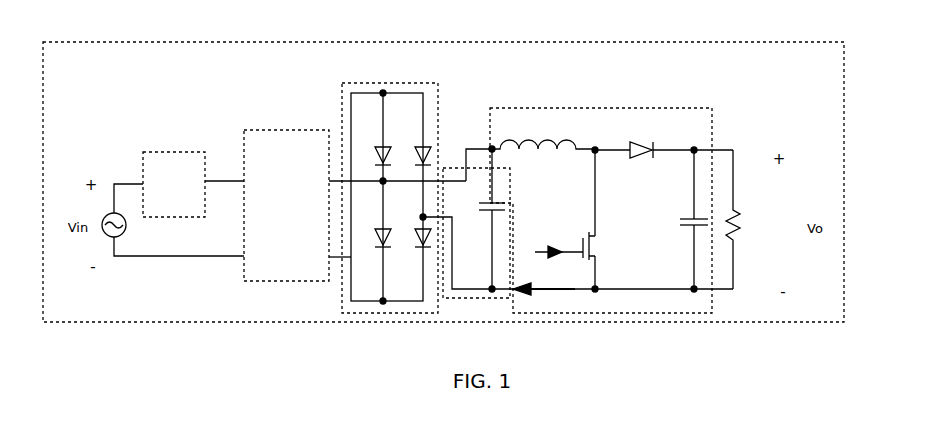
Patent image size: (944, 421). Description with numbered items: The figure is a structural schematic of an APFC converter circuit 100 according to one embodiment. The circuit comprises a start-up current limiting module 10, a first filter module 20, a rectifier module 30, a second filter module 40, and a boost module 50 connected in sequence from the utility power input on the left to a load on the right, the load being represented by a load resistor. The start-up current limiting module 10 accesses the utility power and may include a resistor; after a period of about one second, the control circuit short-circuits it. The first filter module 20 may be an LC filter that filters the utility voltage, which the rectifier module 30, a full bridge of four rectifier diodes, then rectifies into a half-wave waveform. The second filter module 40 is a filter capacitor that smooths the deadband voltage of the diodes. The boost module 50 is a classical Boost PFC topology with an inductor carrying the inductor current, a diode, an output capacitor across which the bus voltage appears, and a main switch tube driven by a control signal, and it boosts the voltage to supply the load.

The APFC converter circuit 100 is at (790, 42).
The start-up current limiting module 10 is at (181, 152).
The first filter module 20 is at (296, 130).
The rectifier module 30 is at (425, 83).
The second filter module 40 is at (446, 170).
The boost module 50 is at (690, 107).